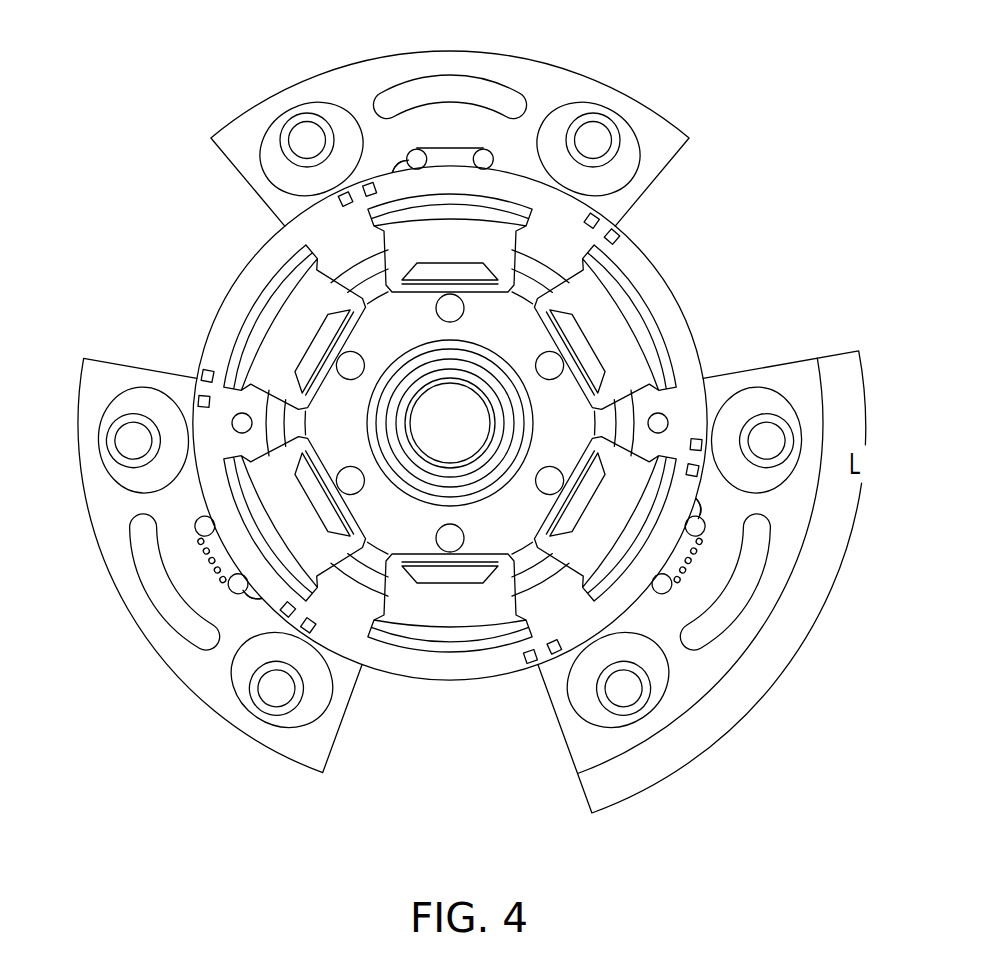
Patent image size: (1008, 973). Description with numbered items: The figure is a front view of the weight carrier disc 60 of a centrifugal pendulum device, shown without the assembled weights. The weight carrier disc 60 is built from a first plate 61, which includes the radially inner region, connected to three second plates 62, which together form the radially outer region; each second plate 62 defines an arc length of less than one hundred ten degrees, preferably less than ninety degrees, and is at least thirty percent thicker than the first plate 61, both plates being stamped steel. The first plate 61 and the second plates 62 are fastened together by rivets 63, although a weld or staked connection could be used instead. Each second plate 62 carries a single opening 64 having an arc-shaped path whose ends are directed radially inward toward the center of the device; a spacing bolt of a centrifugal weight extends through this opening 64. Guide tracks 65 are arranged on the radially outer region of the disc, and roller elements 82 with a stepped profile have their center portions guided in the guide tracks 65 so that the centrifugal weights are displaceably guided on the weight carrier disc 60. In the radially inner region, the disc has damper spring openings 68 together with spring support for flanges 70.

The weight carrier disc 60 is at (688, 284).
The first plate 61 is at (692, 333).
The second plate 62 is at (680, 147).
The rivets 63 is at (482, 150).
The opening 64 is at (474, 92).
The guide track 65 is at (258, 157).
The damper spring openings 68 is at (306, 300).
The spring support for flanges 70 is at (490, 213).
The roller elements 82 is at (304, 130).